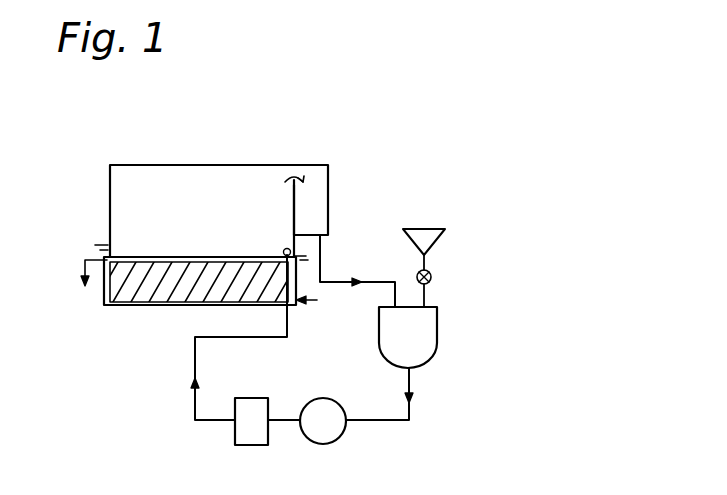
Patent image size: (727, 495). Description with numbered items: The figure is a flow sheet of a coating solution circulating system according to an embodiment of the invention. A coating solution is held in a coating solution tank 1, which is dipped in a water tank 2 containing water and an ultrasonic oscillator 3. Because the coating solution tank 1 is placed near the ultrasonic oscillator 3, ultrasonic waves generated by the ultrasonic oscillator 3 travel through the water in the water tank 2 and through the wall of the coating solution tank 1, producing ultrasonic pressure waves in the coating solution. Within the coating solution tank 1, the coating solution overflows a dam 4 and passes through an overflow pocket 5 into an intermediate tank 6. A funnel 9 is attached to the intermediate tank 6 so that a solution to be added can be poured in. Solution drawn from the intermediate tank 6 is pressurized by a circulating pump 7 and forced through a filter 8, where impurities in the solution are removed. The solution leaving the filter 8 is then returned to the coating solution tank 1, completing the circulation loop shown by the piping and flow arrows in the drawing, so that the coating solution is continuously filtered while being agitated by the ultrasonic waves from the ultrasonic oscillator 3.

The coating solution tank 1 is at (109, 182).
The water tank 2 is at (100, 298).
The ultrasonic oscillator 3 is at (158, 298).
The dam 4 is at (293, 197).
The overflow pocket 5 is at (318, 207).
The intermediate tank 6 is at (438, 325).
The circulating pump 7 is at (325, 445).
The filter 8 is at (252, 448).
The funnel 9 is at (440, 241).